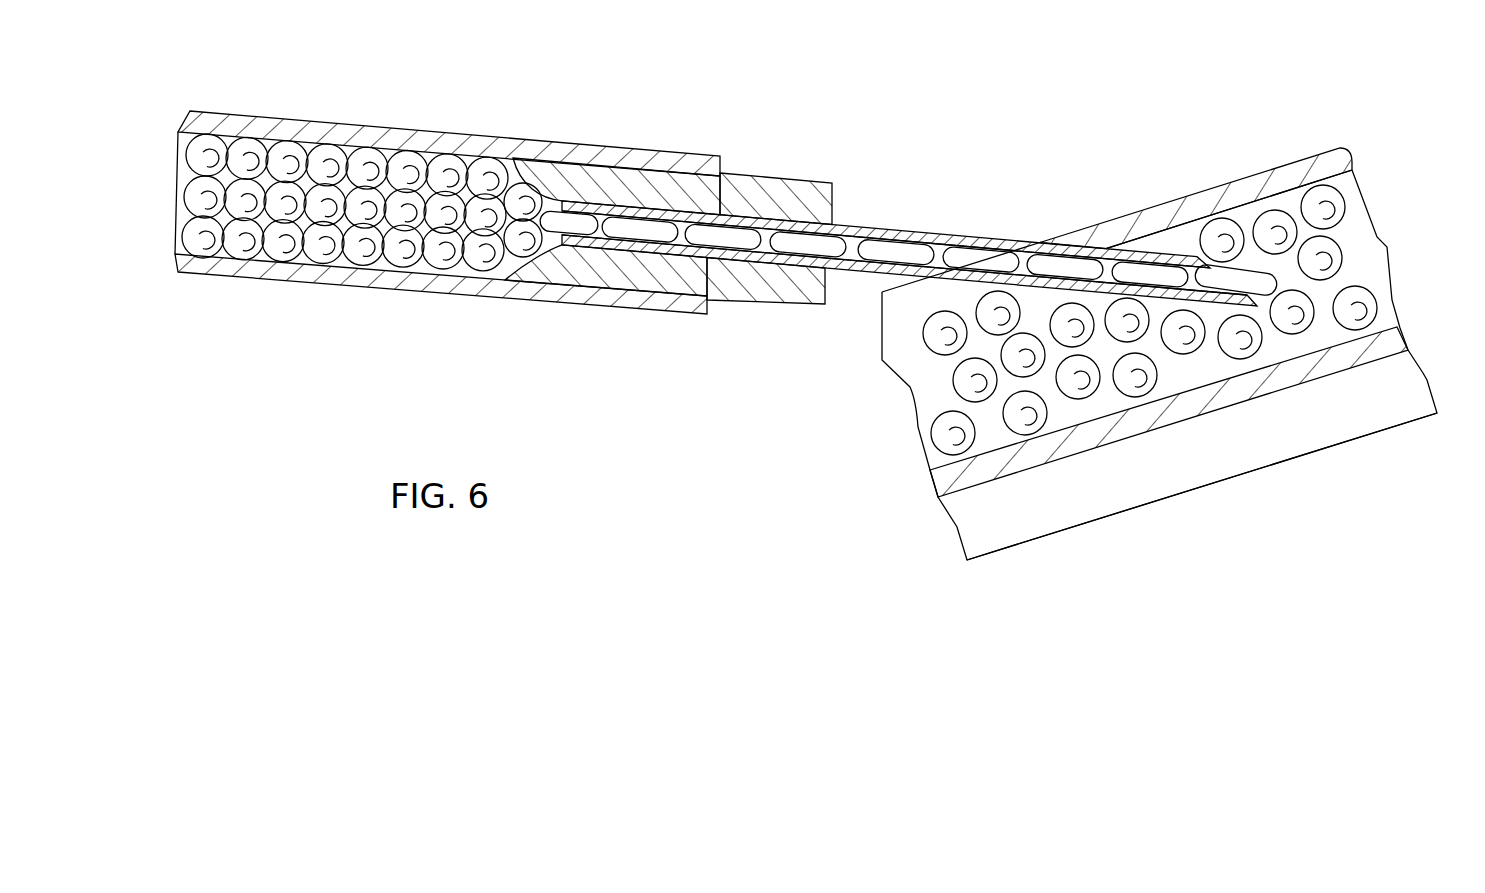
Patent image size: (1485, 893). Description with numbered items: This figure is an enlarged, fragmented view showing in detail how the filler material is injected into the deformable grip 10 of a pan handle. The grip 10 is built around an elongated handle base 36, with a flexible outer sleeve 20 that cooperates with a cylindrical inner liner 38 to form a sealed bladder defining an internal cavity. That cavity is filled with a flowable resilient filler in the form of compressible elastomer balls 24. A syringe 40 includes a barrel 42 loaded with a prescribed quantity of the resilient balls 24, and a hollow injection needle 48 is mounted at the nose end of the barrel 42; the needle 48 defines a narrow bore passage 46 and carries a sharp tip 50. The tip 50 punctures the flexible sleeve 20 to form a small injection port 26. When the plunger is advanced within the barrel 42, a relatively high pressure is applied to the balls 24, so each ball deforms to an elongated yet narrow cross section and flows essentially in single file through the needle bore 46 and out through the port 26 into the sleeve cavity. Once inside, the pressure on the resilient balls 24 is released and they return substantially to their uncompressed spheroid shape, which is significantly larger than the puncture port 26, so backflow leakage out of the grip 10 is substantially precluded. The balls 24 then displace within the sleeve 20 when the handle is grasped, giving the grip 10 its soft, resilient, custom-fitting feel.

The grip 10 is at (1120, 330).
The sleeve 20 is at (1199, 173).
The resilient balls 24 is at (815, 294).
The injection port 26 is at (1229, 202).
The handle base 36 is at (1202, 487).
The inner liner 38 is at (1169, 412).
The syringe 40 is at (716, 159).
The barrel 42 is at (503, 190).
The bore passage 46 is at (909, 248).
The injection needle 48 is at (904, 243).
The sharp tip 50 is at (1322, 271).